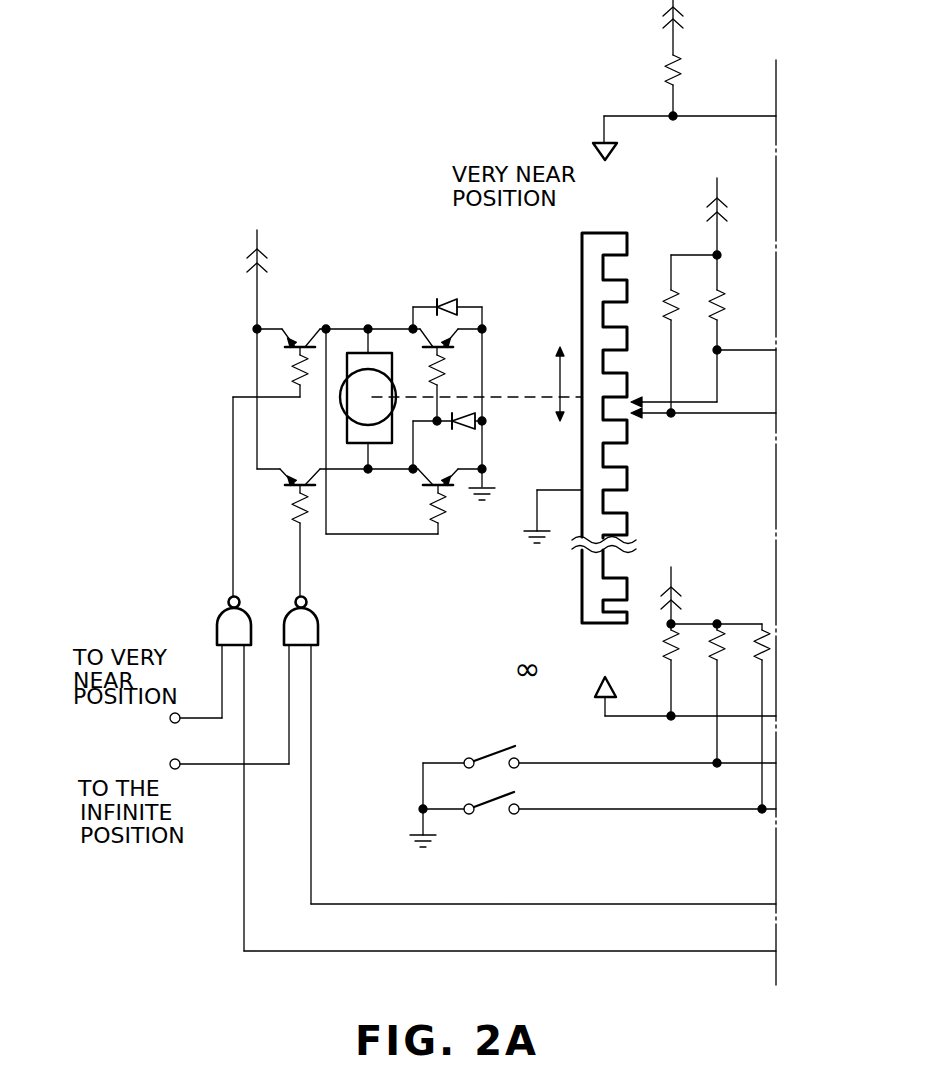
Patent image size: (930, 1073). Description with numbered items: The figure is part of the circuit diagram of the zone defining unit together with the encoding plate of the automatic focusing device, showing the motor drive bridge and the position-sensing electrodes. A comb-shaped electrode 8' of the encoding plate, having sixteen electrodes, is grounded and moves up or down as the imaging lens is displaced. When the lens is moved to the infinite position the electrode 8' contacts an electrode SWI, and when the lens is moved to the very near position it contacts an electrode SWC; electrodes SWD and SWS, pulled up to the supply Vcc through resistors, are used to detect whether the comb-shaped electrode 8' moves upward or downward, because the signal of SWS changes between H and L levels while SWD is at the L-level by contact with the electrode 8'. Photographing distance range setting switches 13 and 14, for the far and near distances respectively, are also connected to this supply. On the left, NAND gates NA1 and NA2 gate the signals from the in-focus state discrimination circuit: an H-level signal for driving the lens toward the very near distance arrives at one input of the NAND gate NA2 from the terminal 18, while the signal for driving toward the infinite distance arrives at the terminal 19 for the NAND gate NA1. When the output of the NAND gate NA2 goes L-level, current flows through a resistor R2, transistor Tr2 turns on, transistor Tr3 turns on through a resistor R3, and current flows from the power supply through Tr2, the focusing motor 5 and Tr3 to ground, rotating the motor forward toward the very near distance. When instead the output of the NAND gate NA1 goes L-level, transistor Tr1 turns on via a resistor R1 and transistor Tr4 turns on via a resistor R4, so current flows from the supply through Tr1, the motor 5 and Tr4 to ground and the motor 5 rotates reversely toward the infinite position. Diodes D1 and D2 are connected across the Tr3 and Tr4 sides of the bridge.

The focusing motor 5 is at (358, 380).
The comb-shaped electrode 8' is at (582, 428).
The photographing distance range setting switch (SWF) 13 is at (483, 755).
The photographing distance range setting switch (SWT) 14 is at (497, 820).
The terminal 18 is at (170, 718).
The terminal 19 is at (170, 764).
The transistor Tr1 is at (298, 480).
The transistor Tr2 is at (304, 328).
The transistor Tr3 is at (418, 476).
The transistor Tr4 is at (457, 337).
The resistor R1 is at (297, 512).
The resistor R2 is at (303, 395).
The resistor R3 is at (447, 510).
The resistor R4 is at (447, 375).
The diode D1 is at (464, 432).
The diode D2 is at (448, 300).
The electrode SWC is at (612, 151).
The electrode SWD is at (648, 414).
The electrode SWS is at (650, 406).
The electrode SWI is at (611, 678).
The NAND gate NA1 is at (320, 632).
The NAND gate NA2 is at (220, 630).
The power supply Vcc is at (748, 177).